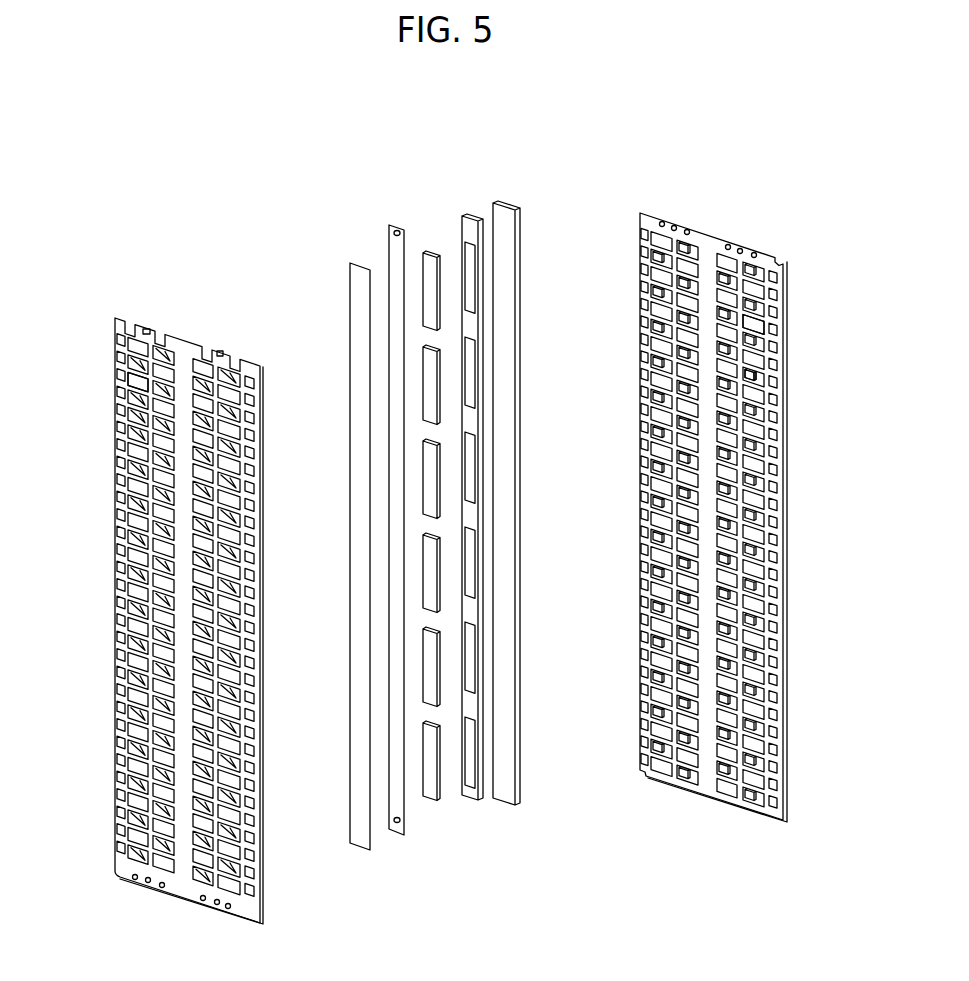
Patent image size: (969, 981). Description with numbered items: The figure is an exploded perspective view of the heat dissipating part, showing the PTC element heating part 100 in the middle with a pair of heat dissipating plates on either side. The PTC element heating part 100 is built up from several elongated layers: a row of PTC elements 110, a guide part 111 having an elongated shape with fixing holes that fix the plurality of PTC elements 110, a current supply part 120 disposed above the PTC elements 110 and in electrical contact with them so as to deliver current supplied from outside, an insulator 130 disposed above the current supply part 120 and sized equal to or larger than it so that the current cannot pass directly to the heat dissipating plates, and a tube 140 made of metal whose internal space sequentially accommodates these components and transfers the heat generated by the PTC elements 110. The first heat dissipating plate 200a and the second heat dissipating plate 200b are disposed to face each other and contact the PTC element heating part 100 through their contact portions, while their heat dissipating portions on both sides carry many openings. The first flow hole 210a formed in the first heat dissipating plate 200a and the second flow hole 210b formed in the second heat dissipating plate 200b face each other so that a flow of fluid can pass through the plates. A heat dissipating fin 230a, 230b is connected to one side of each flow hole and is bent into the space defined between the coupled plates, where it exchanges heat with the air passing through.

The PTC element heating part 100 is at (558, 152).
The PTC elements 110 is at (432, 256).
The guide part 111 is at (468, 228).
The current supply part 120 is at (398, 226).
The insulator 130 is at (359, 265).
The tube 140 is at (507, 212).
The first heat dissipating plate 200a is at (708, 231).
The second heat dissipating plate 200b is at (188, 332).
The first flow hole 210a is at (763, 337).
The second flow hole 210b is at (128, 387).
The heat dissipating fin 230a is at (760, 373).
The heat dissipating fin 230b is at (137, 418).